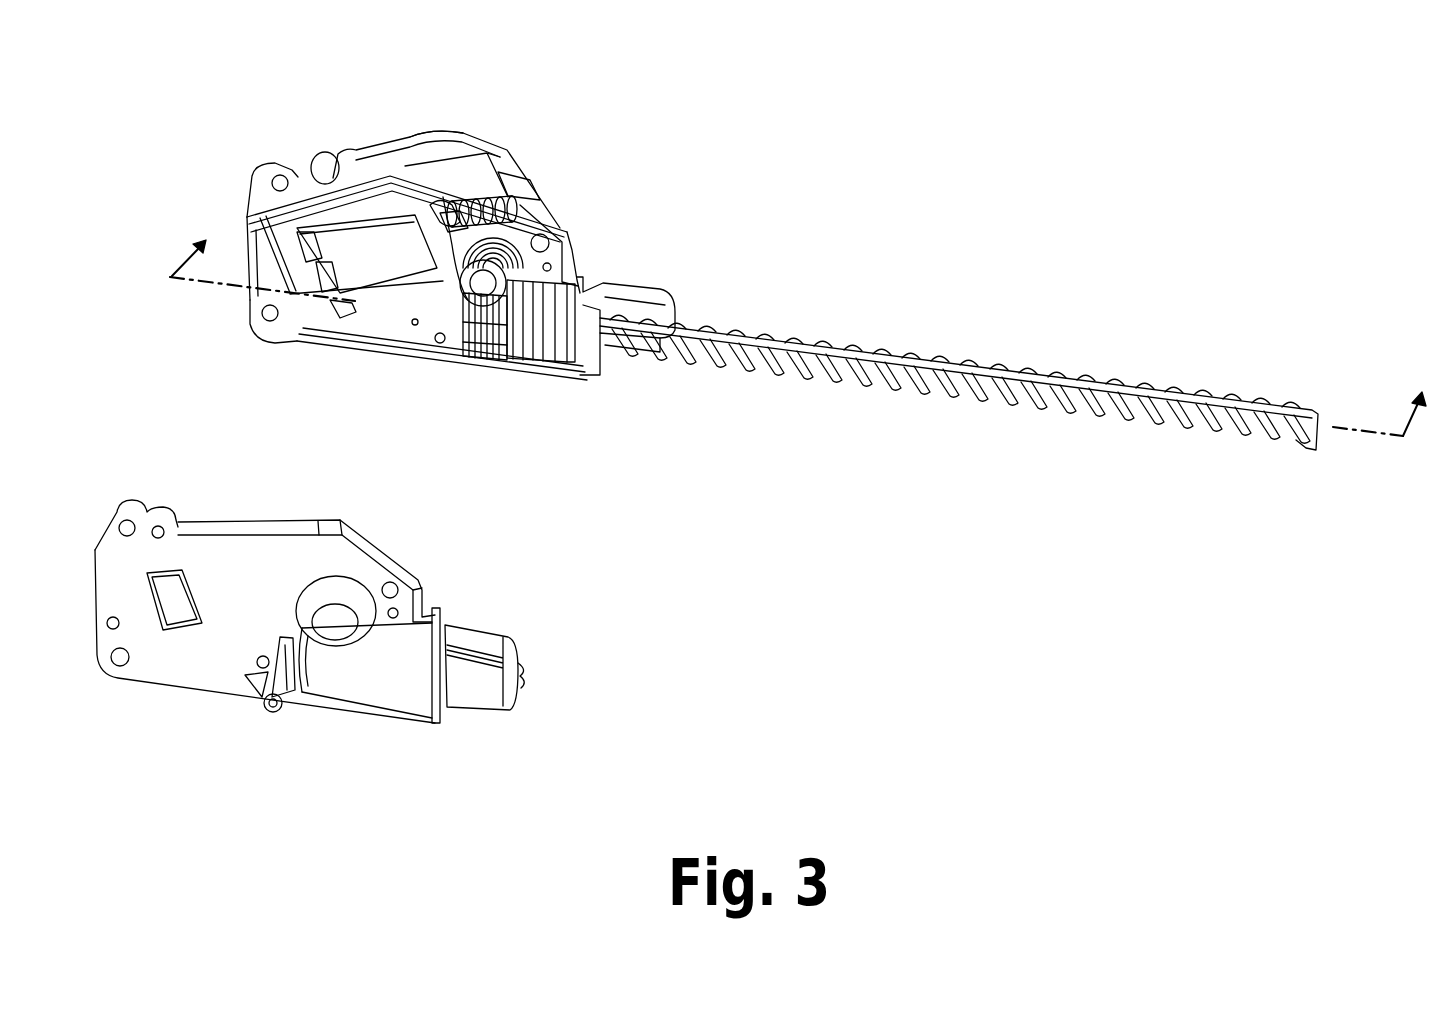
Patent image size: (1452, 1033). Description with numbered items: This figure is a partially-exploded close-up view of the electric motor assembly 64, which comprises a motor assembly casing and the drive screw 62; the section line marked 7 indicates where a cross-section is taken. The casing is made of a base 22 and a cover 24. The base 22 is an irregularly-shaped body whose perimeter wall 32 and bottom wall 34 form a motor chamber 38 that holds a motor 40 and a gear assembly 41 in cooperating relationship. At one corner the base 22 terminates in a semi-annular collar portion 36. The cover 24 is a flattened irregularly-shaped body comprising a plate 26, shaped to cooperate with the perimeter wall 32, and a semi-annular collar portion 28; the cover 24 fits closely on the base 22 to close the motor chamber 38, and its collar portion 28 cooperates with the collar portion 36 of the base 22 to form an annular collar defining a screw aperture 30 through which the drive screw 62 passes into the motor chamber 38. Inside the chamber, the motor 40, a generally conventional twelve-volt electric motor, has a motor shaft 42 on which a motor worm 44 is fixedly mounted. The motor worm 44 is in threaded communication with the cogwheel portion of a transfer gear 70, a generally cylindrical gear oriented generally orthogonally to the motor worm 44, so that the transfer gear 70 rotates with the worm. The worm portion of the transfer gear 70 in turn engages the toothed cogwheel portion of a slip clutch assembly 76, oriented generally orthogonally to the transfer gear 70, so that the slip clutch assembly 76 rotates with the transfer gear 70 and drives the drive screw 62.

The section line 7- 7 is at (810, 320).
The base 22 is at (471, 158).
The cover 24 is at (180, 668).
The plate 26 is at (267, 550).
The semi-annular collar portion 28 is at (473, 683).
The screw aperture 30 is at (527, 677).
The perimeter wall 32 is at (362, 168).
The bottom wall 34 is at (445, 133).
The semi-annular collar portion 36 is at (670, 287).
The motor chamber 38 is at (350, 307).
The motor 40 is at (343, 238).
The gear assembly 41 is at (514, 237).
The motor shaft 42 is at (463, 217).
The motor worm 44 is at (527, 180).
The drive screw 62 is at (930, 363).
The electric motor assembly 64 is at (196, 107).
The transfer gear 70 is at (498, 282).
The slip clutch assembly 76 is at (518, 372).